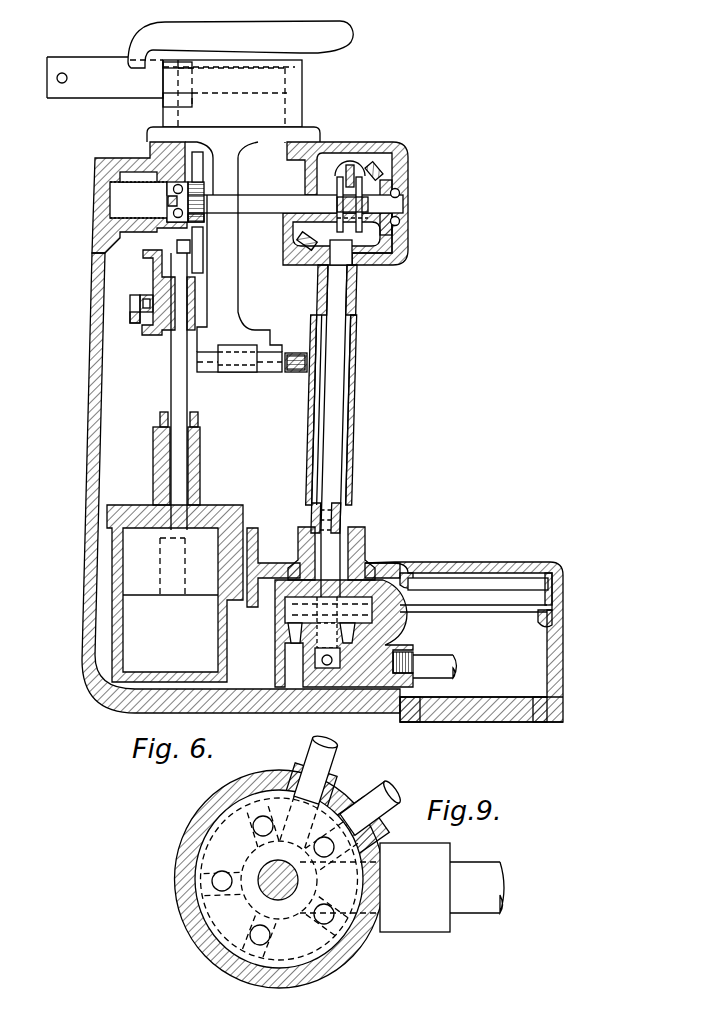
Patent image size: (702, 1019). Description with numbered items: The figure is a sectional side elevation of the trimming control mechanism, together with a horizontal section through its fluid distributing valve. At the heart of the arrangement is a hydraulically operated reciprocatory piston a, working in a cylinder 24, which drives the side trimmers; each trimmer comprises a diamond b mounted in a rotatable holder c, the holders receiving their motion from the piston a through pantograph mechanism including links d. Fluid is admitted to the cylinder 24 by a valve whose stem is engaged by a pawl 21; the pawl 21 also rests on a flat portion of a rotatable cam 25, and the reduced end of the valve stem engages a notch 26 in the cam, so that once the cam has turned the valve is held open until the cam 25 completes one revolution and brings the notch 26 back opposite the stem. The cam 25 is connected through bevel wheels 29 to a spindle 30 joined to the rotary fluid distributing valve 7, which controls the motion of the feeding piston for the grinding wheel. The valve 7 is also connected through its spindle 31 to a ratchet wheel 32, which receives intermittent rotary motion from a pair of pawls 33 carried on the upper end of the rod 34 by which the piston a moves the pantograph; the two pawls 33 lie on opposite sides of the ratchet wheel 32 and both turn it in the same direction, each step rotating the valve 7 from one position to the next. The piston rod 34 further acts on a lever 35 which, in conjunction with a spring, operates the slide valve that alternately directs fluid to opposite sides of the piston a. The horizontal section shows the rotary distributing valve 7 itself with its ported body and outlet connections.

In FIG. 6, the rotary fluid distributing valve 7 is at (310, 612).
In FIG. 9, the rotary fluid distributing valve 7 is at (233, 938).
In FIG. 6, the pawl 21 is at (350, 166).
In FIG. 6, the cylinder 24 is at (200, 662).
In FIG. 6, the rotatable cam 25 is at (392, 223).
In FIG. 6, the notch 26 is at (390, 177).
In FIG. 6, the bevel wheels 29 is at (367, 257).
In FIG. 6, the spindle 30 is at (337, 403).
In FIG. 6, the spindle 31 is at (270, 207).
In FIG. 6, the ratchet wheel 32 is at (204, 221).
In FIG. 6, the pawls 33 is at (203, 167).
In FIG. 6, the rod 34 is at (171, 395).
In FIG. 6, the lever 35 is at (152, 333).
In FIG. 6, the reciprocatory piston a is at (140, 582).
In FIG. 6, the diamond b is at (62, 84).
In FIG. 6, the rotatable holder c is at (108, 78).
In FIG. 6, the links d is at (223, 292).